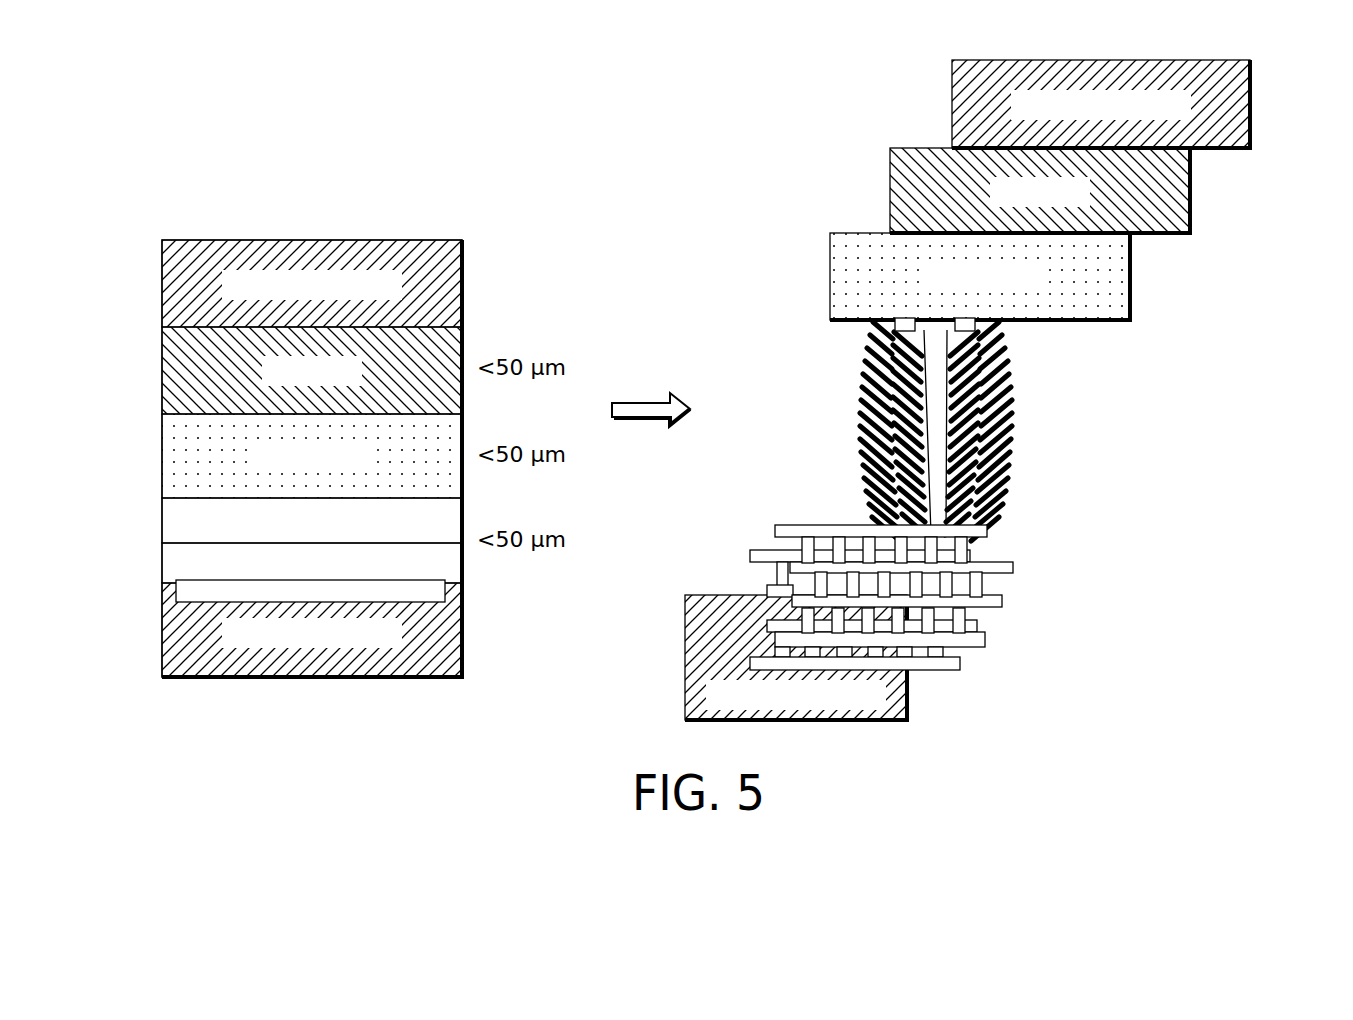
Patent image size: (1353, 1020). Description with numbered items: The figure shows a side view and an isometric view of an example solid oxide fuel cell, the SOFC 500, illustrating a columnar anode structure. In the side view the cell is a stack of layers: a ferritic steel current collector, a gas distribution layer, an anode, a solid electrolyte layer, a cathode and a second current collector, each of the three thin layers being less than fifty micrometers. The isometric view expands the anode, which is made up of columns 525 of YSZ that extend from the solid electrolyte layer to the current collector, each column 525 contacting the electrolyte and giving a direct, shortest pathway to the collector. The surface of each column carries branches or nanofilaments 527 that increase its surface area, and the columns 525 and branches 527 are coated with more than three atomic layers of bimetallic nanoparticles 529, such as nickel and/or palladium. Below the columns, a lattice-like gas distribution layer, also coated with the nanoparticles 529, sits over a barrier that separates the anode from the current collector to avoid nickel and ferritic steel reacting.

The SOFC 500 is at (140, 204).
The columns 525 is at (935, 435).
The branches or nanofilaments 527 is at (1005, 350).
The bimetallic nanoparticles 529 is at (1005, 497).